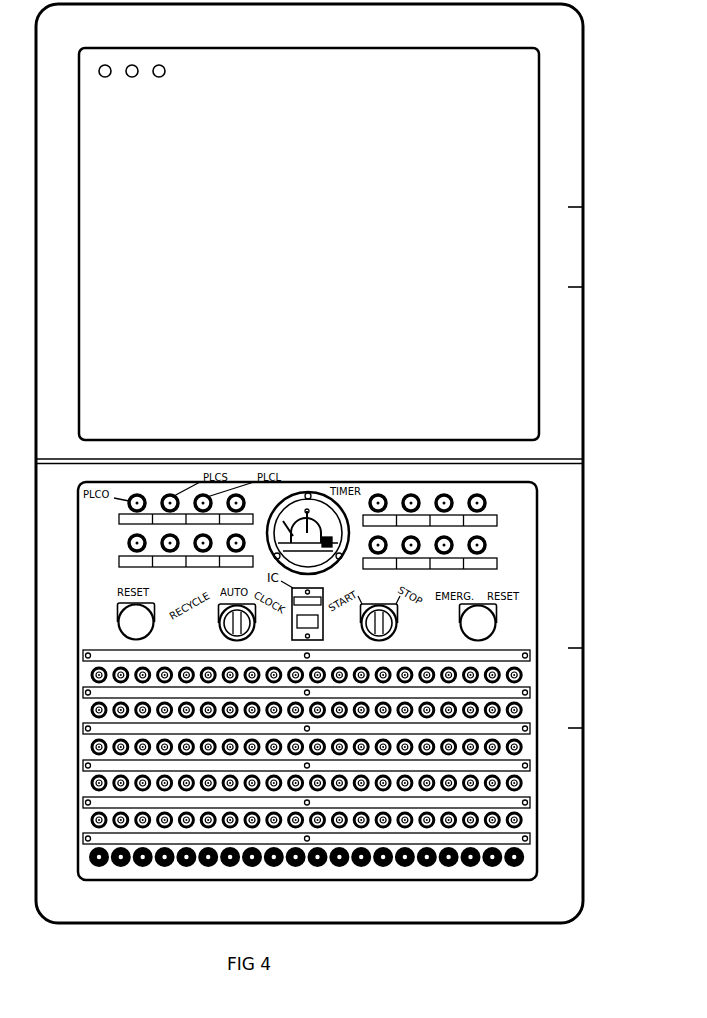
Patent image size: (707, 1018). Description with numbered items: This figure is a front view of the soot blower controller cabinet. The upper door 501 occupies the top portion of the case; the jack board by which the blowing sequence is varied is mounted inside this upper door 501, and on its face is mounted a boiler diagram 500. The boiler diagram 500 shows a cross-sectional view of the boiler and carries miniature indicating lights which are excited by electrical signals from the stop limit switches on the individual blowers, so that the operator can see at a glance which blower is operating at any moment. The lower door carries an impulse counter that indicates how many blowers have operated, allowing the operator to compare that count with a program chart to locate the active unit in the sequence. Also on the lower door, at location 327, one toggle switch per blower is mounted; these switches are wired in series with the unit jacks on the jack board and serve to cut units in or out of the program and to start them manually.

The boiler diagram 500 is at (131, 165).
The upper door 501 is at (569, 170).
The toggle switch location 327 is at (526, 853).